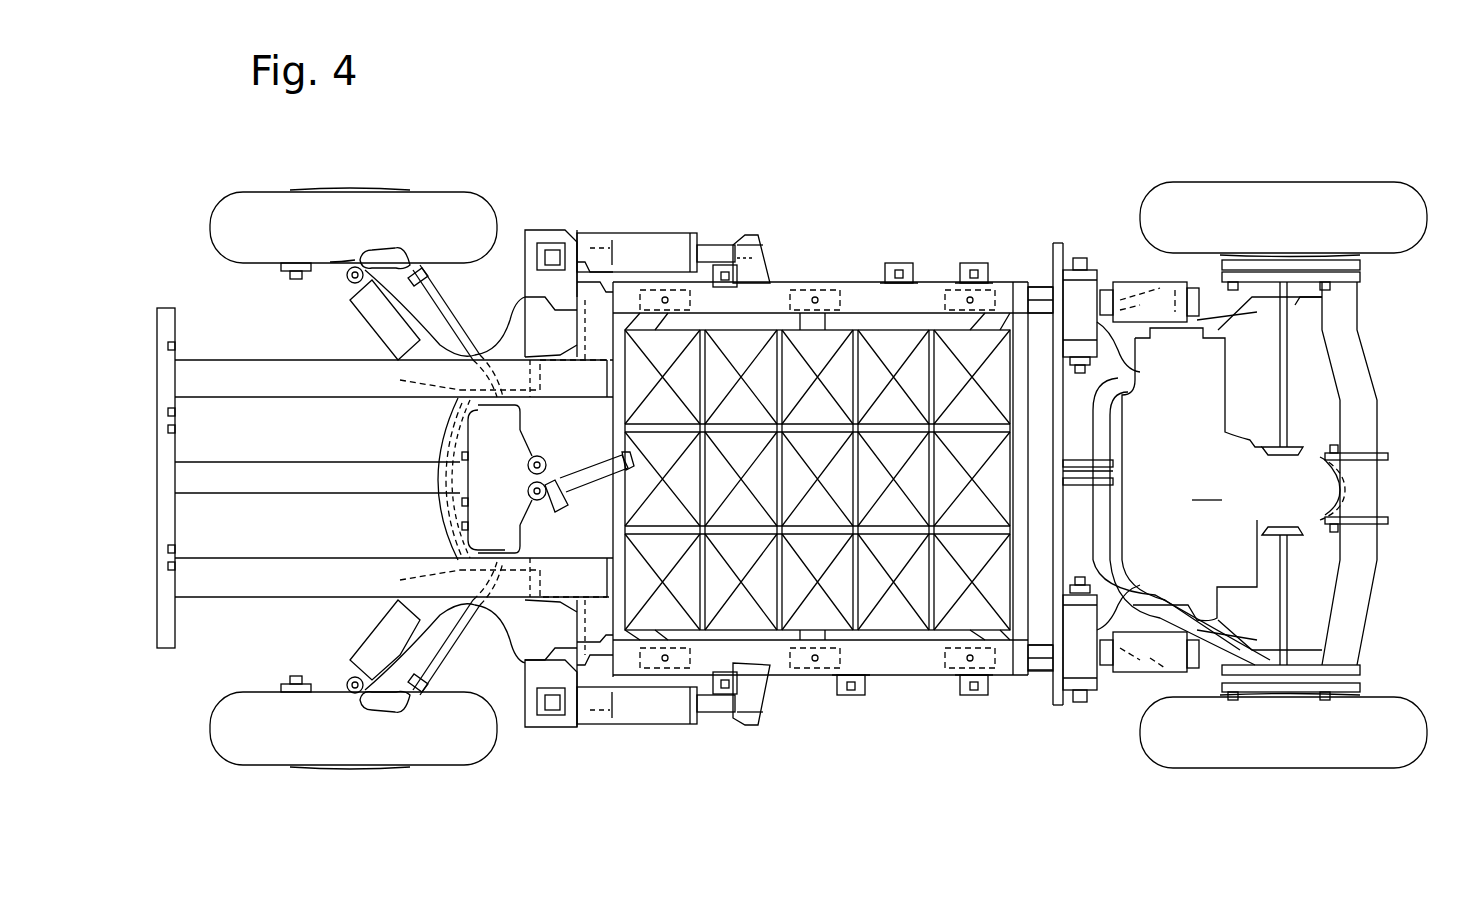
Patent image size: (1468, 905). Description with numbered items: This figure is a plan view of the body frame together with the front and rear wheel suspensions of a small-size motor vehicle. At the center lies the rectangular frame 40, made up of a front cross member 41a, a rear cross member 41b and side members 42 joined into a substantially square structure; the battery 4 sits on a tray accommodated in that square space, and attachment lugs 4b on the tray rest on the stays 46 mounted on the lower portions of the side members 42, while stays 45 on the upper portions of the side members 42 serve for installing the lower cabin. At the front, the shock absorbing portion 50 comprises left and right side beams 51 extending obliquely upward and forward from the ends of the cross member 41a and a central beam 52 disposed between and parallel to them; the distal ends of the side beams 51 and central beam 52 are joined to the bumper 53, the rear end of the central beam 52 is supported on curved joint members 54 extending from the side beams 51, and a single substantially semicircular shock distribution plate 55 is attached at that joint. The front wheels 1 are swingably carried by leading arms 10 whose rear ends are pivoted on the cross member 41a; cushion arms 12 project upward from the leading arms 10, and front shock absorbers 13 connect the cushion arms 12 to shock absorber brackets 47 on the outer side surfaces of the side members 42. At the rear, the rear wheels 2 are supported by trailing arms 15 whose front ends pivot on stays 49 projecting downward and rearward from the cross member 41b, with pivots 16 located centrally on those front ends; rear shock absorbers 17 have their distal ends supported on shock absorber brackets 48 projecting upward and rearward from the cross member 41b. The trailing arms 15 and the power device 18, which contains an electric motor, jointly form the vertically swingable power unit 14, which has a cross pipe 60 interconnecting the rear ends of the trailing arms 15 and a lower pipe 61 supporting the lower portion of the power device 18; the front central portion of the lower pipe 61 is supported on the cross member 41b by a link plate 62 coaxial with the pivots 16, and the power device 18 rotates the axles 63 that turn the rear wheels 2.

The front wheel 1 is at (240, 192).
The rear wheel 2 is at (1215, 190).
The battery 4 is at (845, 330).
The attachment lug 4b is at (935, 640).
The leading arm 10 is at (372, 320).
The cushion arm 12 is at (525, 248).
The front shock absorber 13 is at (636, 233).
The vertically swingable power unit 14 is at (1253, 494).
The trailing arm 15 is at (1118, 345).
The pivot 16 is at (1080, 690).
The rear shock absorber 17 is at (1135, 300).
The power device 18 is at (1181, 496).
The rectangular frame 40 is at (820, 454).
The front cross member 41a is at (590, 320).
The rear cross member 41b is at (1078, 270).
The side member 42 is at (776, 283).
The stay 45 is at (850, 695).
The stay 46 is at (1000, 313).
The shock absorber bracket 47 is at (760, 250).
The shock absorber bracket 48 is at (1040, 290).
The stay 49 is at (1095, 262).
The shock absorbing portion 50 is at (208, 658).
The side beam 51 is at (294, 397).
The central beam 52 is at (248, 485).
The bumper 53 is at (178, 448).
The joint member 54 is at (442, 455).
The shock distribution plate 55 is at (464, 442).
The cross pipe 60 is at (1368, 585).
The lower pipe 61 is at (1240, 312).
The link plate 62 is at (1100, 462).
The axle 63 is at (1285, 420).